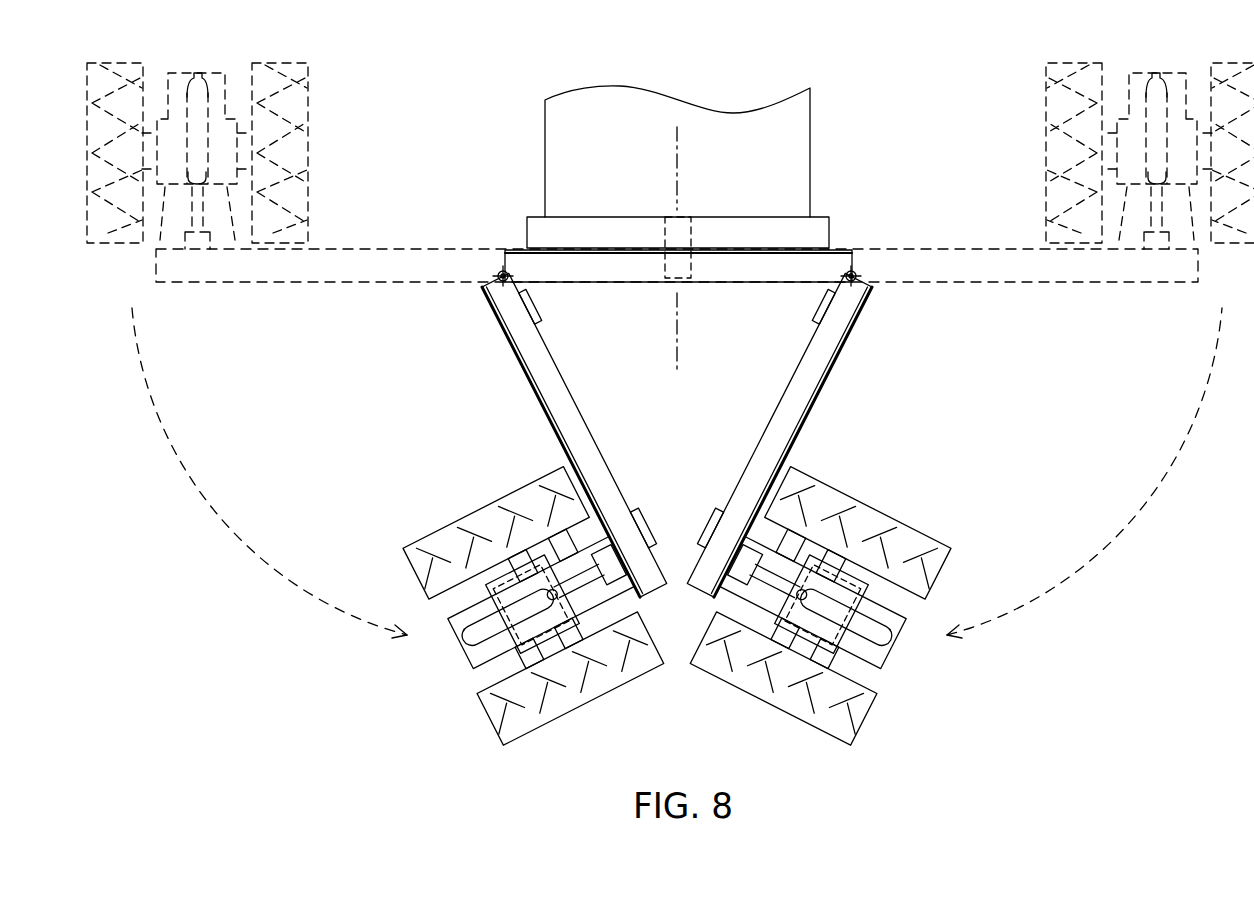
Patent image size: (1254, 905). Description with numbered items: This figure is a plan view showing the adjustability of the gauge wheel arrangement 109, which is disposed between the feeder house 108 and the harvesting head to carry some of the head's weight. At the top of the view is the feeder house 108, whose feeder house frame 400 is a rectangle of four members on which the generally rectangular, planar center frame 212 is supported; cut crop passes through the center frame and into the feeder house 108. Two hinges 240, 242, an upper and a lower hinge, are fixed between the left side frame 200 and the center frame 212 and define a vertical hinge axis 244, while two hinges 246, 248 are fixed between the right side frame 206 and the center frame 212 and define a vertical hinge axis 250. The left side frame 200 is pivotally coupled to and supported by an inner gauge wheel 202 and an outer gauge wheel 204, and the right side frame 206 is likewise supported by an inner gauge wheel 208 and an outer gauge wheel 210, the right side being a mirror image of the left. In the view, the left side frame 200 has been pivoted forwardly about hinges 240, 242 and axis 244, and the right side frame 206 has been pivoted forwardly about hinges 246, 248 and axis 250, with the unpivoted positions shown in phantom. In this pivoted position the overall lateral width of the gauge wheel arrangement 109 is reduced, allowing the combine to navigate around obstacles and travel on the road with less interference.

The feeder house 108 is at (607, 145).
The feeder house frame 400 is at (775, 237).
The center frame 212 is at (588, 265).
The hinge 246 is at (503, 272).
The hinge 248 is at (503, 276).
The vertical hinge axis 250 is at (497, 275).
The hinge 240 is at (851, 272).
The hinge 242 is at (851, 276).
The vertical hinge axis 244 is at (857, 275).
The right side frame 206 is at (540, 366).
The left side frame 200 is at (816, 360).
The inner gauge wheel 208 is at (443, 532).
The outer gauge wheel 210 is at (490, 710).
The inner gauge wheel 202 is at (912, 532).
The outer gauge wheel 204 is at (868, 708).
The gauge wheel arrangement 109 is at (1066, 662).